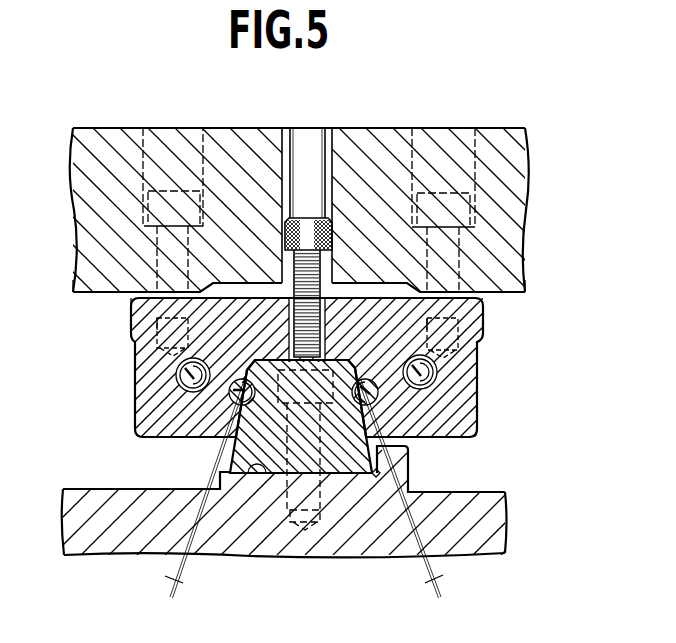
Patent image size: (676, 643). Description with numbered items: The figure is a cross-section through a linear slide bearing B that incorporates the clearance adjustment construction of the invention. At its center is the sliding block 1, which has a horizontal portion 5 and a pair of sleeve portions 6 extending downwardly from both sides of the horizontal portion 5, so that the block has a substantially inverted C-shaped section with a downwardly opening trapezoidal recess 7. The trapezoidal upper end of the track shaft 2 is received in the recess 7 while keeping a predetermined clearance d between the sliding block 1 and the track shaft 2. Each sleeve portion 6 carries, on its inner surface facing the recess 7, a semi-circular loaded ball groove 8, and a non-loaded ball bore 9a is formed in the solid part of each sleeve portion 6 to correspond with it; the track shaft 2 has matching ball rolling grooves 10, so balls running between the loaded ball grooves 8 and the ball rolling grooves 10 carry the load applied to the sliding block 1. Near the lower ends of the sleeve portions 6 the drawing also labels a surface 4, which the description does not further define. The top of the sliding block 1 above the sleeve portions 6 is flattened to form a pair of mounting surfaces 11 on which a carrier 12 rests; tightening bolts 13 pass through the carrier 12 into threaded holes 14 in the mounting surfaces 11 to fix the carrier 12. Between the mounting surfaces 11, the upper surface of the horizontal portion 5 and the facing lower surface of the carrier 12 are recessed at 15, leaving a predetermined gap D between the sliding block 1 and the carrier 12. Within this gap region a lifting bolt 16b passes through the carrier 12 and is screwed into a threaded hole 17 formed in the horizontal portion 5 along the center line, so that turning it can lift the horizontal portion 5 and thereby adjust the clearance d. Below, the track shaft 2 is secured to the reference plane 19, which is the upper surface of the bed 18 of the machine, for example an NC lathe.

The carrier 12 is at (107, 126).
The tightening bolts 13 is at (172, 190).
The gap D is at (226, 283).
The recess 15 is at (262, 258).
The lifting bolts 16b is at (306, 214).
The horizontal portion 5 is at (348, 298).
The recess 7 is at (350, 358).
The mounting surfaces 11 is at (135, 291).
The threaded holes 17 is at (290, 313).
The linear slide bearing B is at (129, 322).
The sliding block 1 is at (129, 346).
The threaded holes 14 is at (130, 353).
The non-loaded ball bore 9a is at (180, 383).
The sleeve portions 6 is at (134, 430).
The bottom surface 4 is at (168, 440).
The loaded ball groove 8 is at (210, 440).
The track shaft 2 is at (226, 463).
The bed 18 is at (488, 491).
The reference plane 19 is at (236, 478).
The ball rolling grooves 10 is at (248, 405).
The clearance d is at (178, 583).